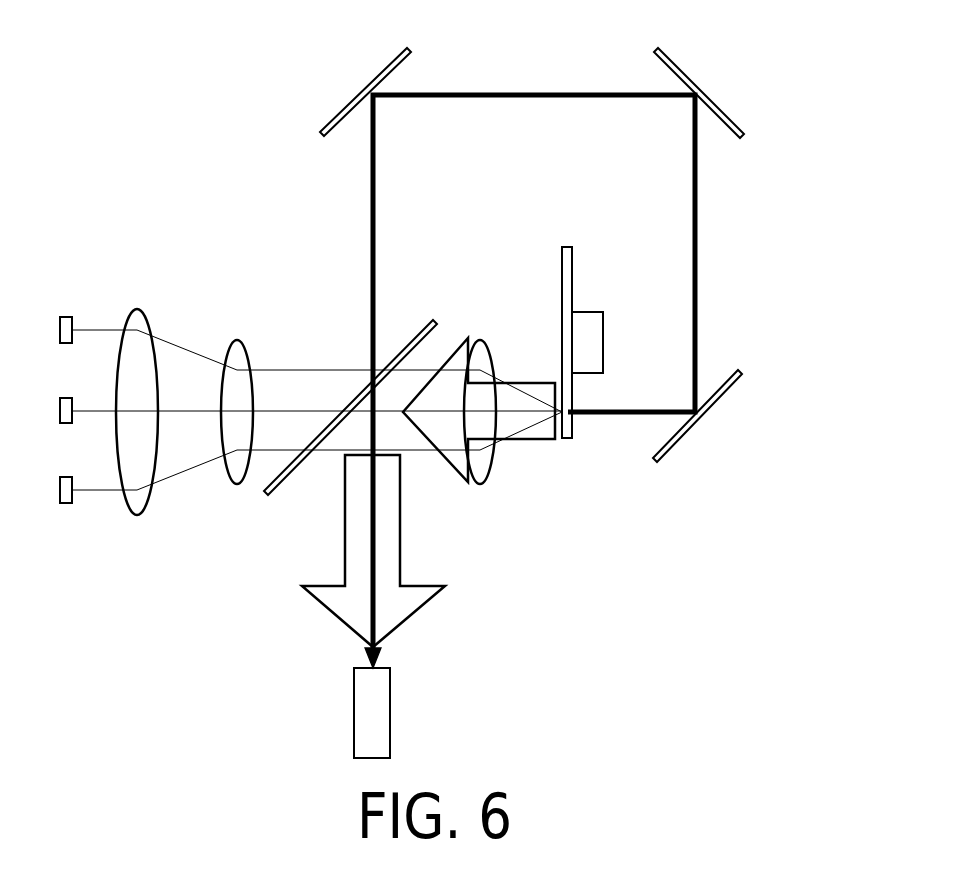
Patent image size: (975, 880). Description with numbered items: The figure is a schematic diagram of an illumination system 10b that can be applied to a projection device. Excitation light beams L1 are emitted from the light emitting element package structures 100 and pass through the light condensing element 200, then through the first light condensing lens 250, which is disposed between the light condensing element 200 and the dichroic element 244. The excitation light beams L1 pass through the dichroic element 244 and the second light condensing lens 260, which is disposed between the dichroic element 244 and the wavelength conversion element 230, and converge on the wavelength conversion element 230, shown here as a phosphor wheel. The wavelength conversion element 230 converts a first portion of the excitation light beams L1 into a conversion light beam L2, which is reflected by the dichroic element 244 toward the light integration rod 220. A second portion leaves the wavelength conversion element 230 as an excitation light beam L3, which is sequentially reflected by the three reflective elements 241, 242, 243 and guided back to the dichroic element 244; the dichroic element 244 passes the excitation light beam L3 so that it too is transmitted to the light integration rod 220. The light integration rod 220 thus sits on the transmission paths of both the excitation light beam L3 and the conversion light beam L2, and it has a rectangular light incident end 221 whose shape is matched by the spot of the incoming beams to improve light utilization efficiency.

The illumination system 10b is at (137, 52).
The light emitting element package structures 100 is at (63, 503).
The light condensing element 200 is at (136, 318).
The first light condensing lens 250 is at (237, 343).
The dichroic element 244 is at (408, 336).
The wavelength conversion element 230 is at (567, 275).
The second light condensing lens 260 is at (483, 356).
The reflective element 243 is at (337, 120).
The reflective element 242 is at (730, 117).
The reflective element 241 is at (733, 390).
The light incident end 221 is at (385, 670).
The light integration rod 220 is at (392, 710).
The excitation light beams L1 is at (97, 330).
The conversion light beam L2 is at (455, 337).
The excitation light beam L3 is at (543, 92).